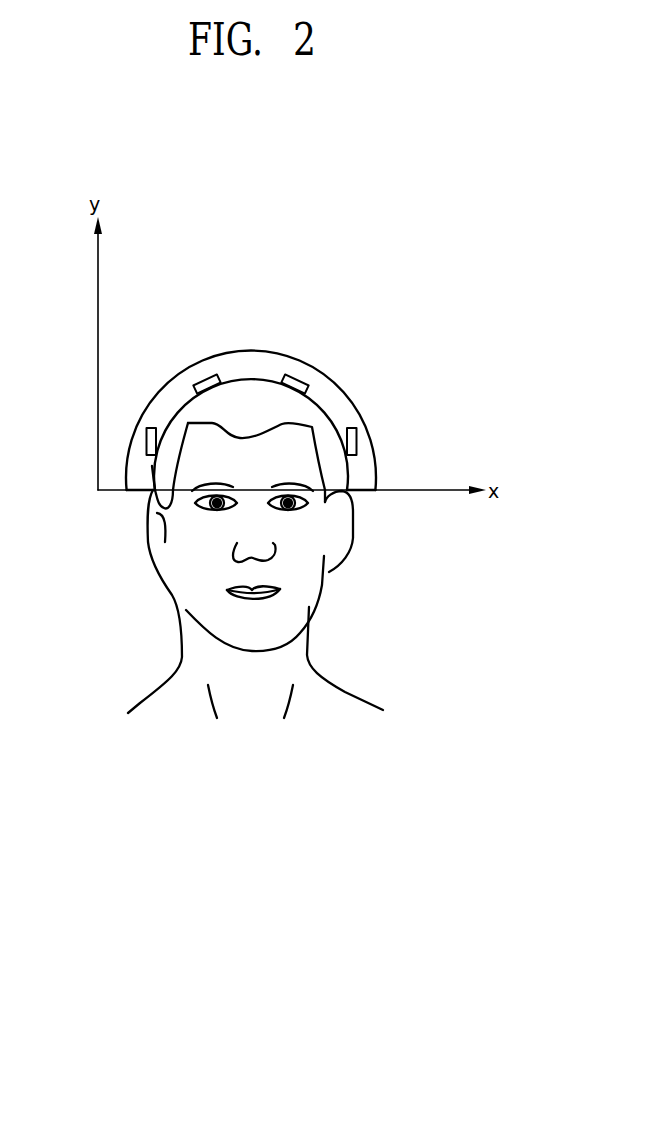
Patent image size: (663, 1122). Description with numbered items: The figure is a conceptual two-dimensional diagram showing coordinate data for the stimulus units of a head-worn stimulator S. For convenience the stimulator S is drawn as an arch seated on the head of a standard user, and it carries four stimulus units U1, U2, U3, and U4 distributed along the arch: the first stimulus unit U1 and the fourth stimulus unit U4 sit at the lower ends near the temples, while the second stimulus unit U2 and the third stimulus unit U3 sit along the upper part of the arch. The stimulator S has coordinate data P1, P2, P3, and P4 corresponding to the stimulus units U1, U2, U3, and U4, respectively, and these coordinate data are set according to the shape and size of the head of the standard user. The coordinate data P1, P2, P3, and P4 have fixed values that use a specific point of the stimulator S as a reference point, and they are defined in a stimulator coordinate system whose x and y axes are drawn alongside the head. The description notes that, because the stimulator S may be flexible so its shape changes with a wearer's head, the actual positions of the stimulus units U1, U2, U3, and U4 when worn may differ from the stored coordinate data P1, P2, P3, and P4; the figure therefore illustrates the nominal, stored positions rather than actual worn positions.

The stimulator S is at (343, 394).
The coordinate data of the first stimulus unit P1 is at (149, 431).
The coordinate data of the second stimulus unit P2 is at (189, 375).
The coordinate data of the third stimulus unit P3 is at (315, 375).
The coordinate data of the fourth stimulus unit P4 is at (354, 429).
The first stimulus unit U1 is at (147, 440).
The second stimulus unit U2 is at (206, 380).
The third stimulus unit U3 is at (298, 380).
The fourth stimulus unit U4 is at (356, 441).